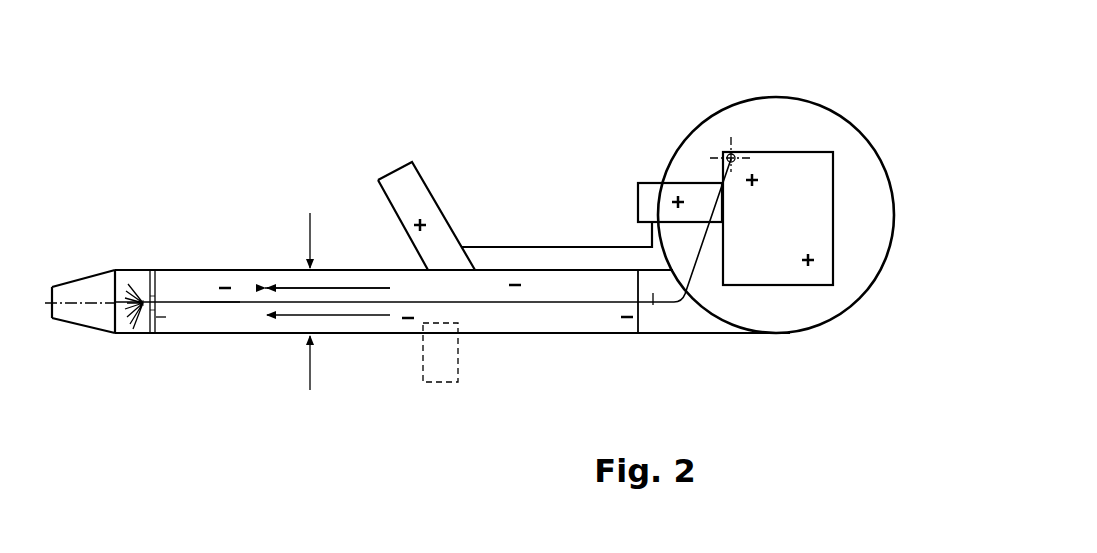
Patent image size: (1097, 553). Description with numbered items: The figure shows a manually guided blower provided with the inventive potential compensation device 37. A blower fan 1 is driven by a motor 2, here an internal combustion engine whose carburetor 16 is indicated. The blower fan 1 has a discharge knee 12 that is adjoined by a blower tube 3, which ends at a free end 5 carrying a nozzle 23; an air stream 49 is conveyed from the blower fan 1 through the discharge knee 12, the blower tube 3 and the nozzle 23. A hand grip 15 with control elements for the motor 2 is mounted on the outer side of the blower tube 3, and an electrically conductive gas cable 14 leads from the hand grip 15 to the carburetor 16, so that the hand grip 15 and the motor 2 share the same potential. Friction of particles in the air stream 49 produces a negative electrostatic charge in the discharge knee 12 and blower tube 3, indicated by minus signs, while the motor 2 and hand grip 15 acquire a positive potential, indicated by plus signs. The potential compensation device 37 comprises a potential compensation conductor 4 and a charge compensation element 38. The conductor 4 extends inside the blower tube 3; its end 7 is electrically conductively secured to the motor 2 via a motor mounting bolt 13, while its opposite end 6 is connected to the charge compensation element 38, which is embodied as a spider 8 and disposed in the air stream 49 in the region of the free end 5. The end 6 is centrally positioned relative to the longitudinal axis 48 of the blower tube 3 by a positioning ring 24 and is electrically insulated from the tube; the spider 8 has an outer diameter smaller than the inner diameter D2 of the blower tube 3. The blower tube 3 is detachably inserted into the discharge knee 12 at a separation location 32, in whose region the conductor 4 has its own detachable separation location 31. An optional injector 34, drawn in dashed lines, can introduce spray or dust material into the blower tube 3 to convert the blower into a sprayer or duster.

The blower fan 1 is at (773, 103).
The motor 2 is at (808, 160).
The blower tube 3 is at (235, 270).
The potential compensation conductor 4 is at (221, 304).
The free end 5 is at (125, 246).
The end 6 is at (147, 325).
The end 7 is at (737, 149).
The spider 8 is at (128, 315).
The discharge knee 12 is at (720, 302).
The motor mounting bolt 13 is at (728, 152).
The gas cable 14 is at (522, 247).
The hand grip 15 is at (430, 200).
The carburetor 16 is at (653, 188).
The nozzle 23 is at (88, 295).
The positioning ring 24 is at (160, 317).
The separation location 31 is at (653, 300).
The separation location 32 is at (633, 330).
The injector 34 is at (440, 352).
The potential compensation device 37 is at (183, 293).
The charge compensation element 38 is at (142, 289).
The longitudinal axis 48 is at (72, 305).
The air stream 49 is at (345, 390).
The inner diameter D2 is at (310, 372).